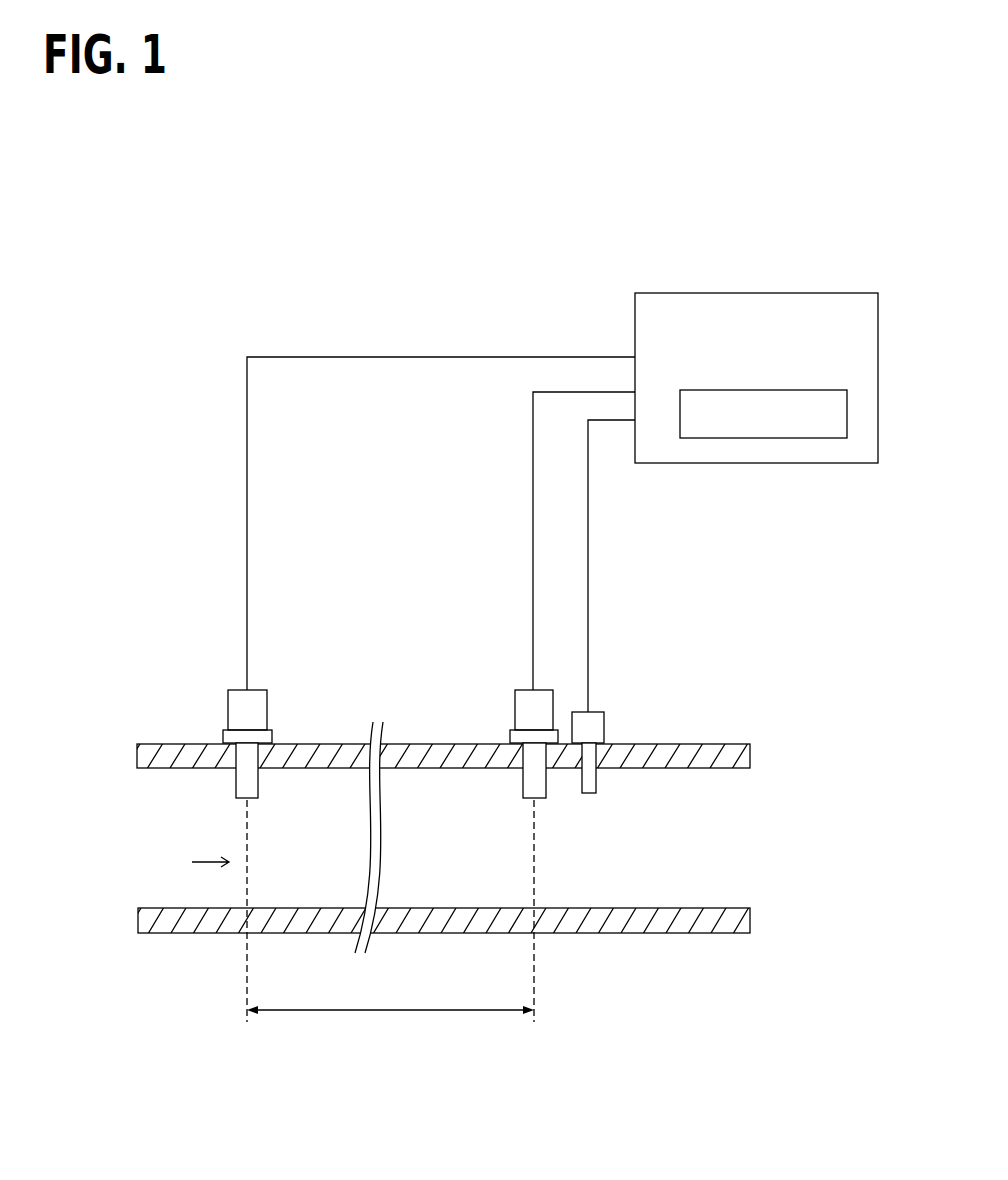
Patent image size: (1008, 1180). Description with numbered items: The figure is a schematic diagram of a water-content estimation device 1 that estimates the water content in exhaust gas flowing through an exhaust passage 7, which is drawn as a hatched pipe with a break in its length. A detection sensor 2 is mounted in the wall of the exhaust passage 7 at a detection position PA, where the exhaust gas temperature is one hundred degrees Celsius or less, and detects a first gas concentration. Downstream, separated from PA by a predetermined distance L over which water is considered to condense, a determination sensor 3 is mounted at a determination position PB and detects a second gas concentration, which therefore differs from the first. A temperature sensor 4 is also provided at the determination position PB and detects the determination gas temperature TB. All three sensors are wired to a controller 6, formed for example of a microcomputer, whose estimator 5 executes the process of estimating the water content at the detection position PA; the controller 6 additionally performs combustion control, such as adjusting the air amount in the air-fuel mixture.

The estimation device 1 is at (398, 330).
The detection sensor 2 is at (265, 690).
The determination sensor 3 is at (515, 690).
The temperature sensor 4 is at (600, 712).
The estimator 5 is at (763, 438).
The controller 6 is at (755, 293).
The exhaust passage 7 is at (150, 744).